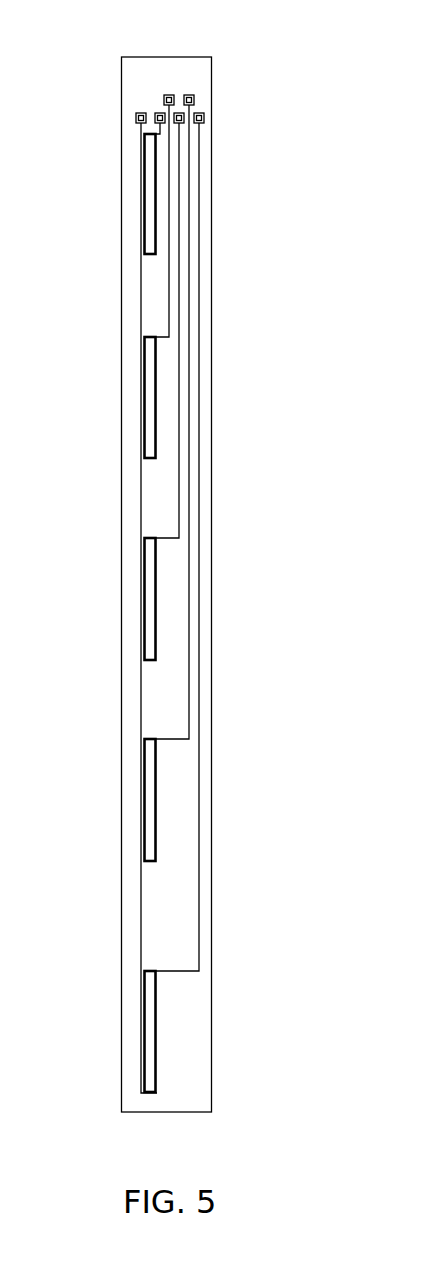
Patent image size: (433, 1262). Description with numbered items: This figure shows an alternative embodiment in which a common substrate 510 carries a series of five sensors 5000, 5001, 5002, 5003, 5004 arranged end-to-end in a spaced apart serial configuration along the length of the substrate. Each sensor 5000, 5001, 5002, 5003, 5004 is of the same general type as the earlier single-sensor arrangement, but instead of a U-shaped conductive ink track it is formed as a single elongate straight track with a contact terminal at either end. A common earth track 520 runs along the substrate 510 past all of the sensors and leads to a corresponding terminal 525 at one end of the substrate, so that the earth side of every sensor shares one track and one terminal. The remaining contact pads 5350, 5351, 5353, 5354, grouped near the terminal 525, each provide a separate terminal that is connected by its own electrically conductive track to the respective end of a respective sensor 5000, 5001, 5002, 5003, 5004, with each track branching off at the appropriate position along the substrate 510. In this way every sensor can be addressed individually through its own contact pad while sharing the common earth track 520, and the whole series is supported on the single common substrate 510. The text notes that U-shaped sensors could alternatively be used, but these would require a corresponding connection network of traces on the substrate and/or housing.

The common substrate 510 is at (128, 703).
The common earth track 520 is at (142, 323).
The terminal 525 is at (135, 117).
The contact pad 5350 is at (158, 114).
The contact pad 5351 is at (168, 94).
The contact pad 5353 is at (195, 98).
The contact pad 5354 is at (204, 118).
The sensor 5000 is at (152, 185).
The sensor 5001 is at (152, 386).
The sensor 5002 is at (152, 585).
The sensor 5003 is at (152, 800).
The sensor 5004 is at (151, 1015).